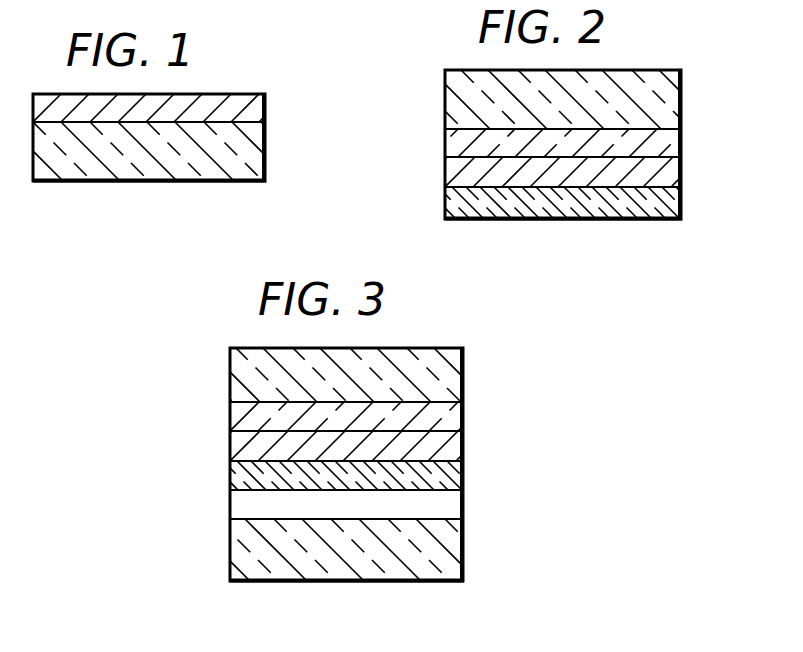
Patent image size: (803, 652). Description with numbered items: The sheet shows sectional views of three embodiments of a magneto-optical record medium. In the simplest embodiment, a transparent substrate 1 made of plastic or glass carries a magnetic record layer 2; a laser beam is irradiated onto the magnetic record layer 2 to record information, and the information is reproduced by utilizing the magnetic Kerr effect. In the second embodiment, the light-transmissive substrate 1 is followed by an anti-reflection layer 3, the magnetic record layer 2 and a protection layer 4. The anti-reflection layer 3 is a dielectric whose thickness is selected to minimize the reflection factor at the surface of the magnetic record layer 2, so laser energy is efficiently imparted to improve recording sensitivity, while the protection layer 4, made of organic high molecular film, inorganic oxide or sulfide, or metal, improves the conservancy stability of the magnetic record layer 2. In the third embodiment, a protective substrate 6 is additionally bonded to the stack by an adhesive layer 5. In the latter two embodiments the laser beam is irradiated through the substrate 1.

In FIG. 1, the transparent substrate 1 is at (258, 163).
In FIG. 2, the transparent substrate 1 is at (672, 102).
In FIG. 3, the transparent substrate 1 is at (452, 379).
In FIG. 1, the magnetic record layer 2 is at (258, 113).
In FIG. 2, the magnetic record layer 2 is at (670, 175).
In FIG. 3, the magnetic record layer 2 is at (455, 450).
In FIG. 2, the anti-reflection layer 3 is at (663, 145).
In FIG. 3, the anti-reflection layer 3 is at (454, 422).
In FIG. 2, the protection layer 4 is at (670, 207).
In FIG. 3, the protection layer 4 is at (455, 479).
In FIG. 3, the adhesive layer 5 is at (455, 508).
In FIG. 3, the protective substrate 6 is at (455, 556).